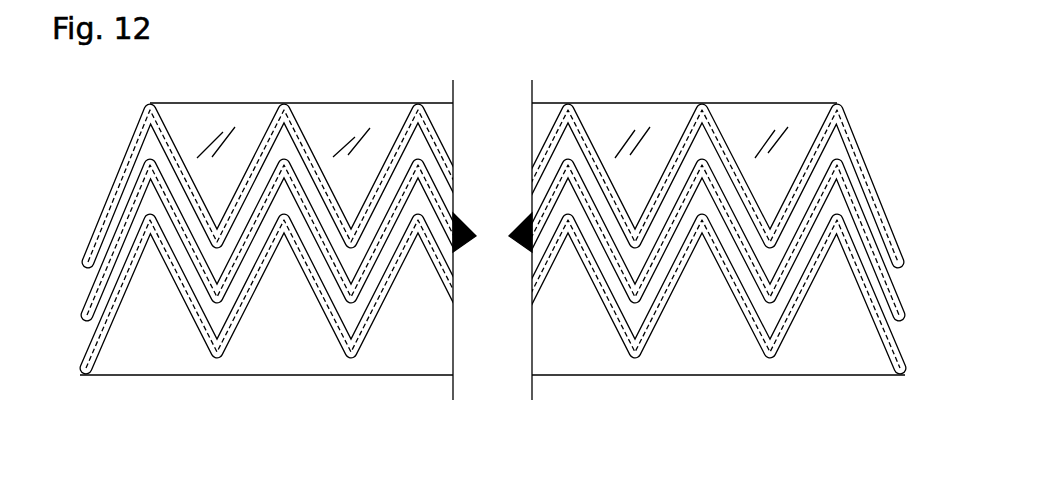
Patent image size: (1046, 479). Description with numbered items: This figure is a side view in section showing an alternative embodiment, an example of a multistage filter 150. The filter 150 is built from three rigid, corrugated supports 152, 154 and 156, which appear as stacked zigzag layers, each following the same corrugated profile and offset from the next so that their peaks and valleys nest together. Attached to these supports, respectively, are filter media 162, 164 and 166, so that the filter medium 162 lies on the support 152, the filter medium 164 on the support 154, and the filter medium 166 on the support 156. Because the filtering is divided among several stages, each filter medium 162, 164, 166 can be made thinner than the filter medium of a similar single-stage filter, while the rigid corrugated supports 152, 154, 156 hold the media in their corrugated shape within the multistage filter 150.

The multistage filter 150 is at (152, 377).
The rigid corrugated support 152 is at (485, 154).
The rigid corrugated support 154 is at (92, 273).
The rigid corrugated support 156 is at (85, 352).
The filter medium 162 is at (173, 121).
The filter medium 164 is at (300, 122).
The filter medium 166 is at (402, 110).